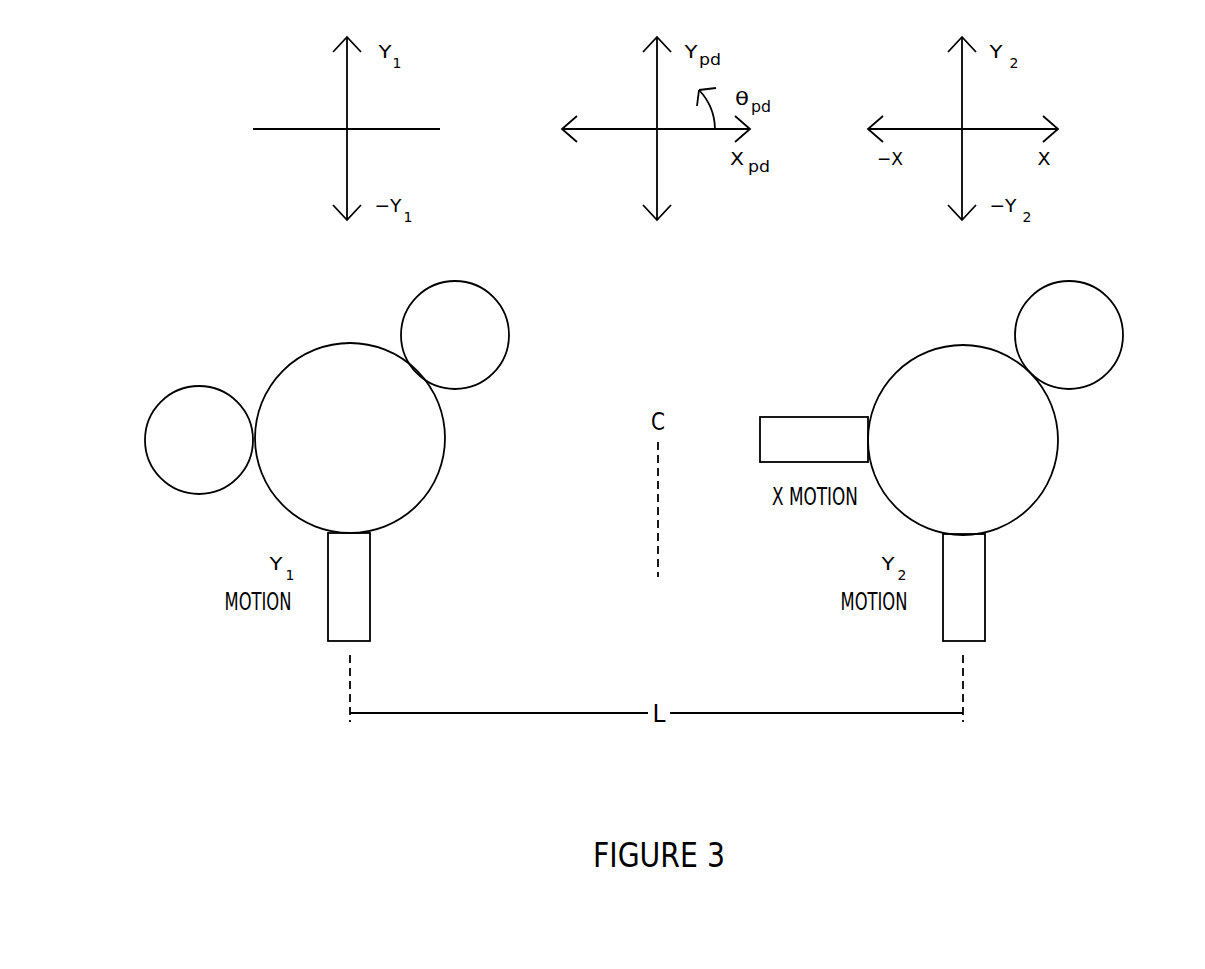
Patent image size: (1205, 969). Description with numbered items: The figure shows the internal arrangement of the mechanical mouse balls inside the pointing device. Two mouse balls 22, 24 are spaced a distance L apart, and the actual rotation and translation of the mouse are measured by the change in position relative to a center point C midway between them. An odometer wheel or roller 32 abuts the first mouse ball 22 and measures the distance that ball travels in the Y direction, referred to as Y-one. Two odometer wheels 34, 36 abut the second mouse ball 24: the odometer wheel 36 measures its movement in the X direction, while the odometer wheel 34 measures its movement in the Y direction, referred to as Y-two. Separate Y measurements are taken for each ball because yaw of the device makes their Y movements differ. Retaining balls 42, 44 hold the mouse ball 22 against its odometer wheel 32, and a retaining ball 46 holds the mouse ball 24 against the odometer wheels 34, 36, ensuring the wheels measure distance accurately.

The mouse ball 22 is at (350, 343).
The mouse ball 24 is at (963, 345).
The odometer wheel 32 is at (370, 575).
The odometer wheel 34 is at (985, 575).
The odometer wheel 36 is at (775, 417).
The retaining ball 42 is at (196, 386).
The retaining ball 44 is at (497, 294).
The retaining ball 46 is at (1105, 293).